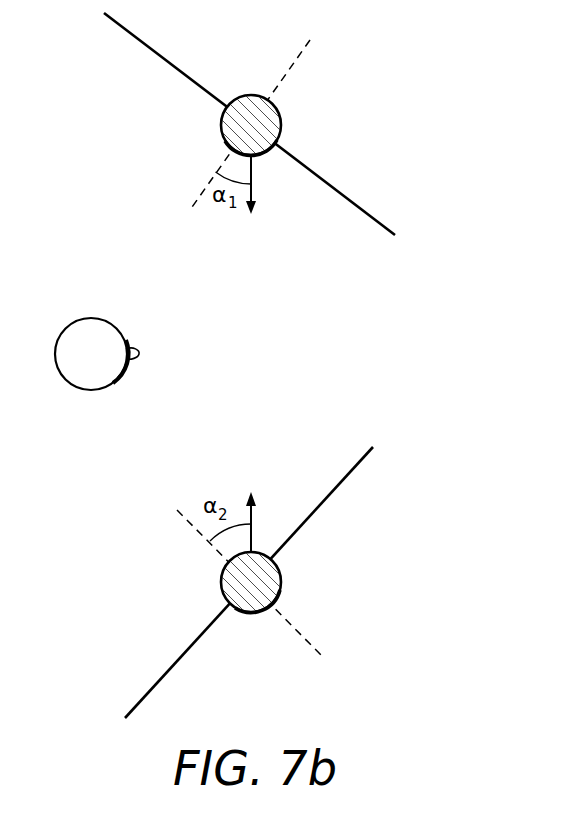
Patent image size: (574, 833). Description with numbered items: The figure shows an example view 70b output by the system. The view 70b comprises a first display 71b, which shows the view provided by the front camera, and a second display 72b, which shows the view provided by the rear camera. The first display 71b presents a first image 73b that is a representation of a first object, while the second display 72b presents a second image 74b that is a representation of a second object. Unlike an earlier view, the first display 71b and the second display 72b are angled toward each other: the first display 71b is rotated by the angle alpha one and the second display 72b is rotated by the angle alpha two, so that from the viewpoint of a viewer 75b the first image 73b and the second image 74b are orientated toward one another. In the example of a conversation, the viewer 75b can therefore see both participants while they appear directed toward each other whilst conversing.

The view 70b is at (384, 640).
The first display 71b is at (367, 213).
The second display 72b is at (350, 478).
The first image 73b is at (282, 122).
The second image 74b is at (282, 581).
The viewer 75b is at (92, 391).